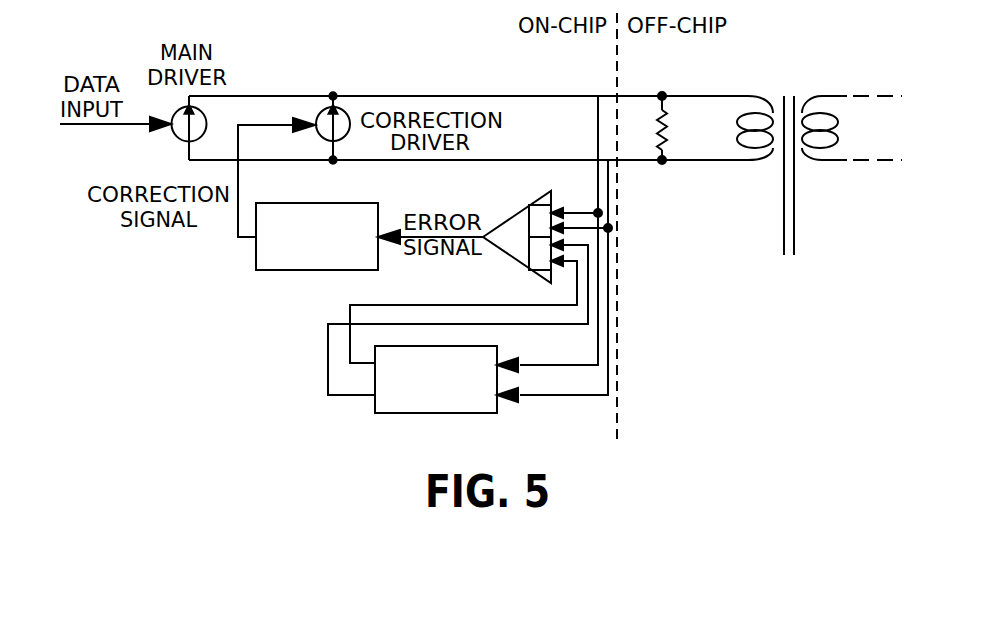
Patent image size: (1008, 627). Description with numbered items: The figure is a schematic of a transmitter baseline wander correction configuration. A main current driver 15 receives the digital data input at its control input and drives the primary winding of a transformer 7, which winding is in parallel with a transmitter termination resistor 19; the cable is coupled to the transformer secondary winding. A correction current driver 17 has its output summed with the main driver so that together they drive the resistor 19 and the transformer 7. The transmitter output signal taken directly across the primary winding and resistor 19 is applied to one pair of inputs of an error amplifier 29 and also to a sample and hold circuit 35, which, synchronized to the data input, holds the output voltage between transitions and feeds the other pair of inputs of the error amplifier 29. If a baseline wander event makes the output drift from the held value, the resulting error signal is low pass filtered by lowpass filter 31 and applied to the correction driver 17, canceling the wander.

The transformer 7 is at (811, 75).
The main current driver 15 is at (178, 139).
The correction current driver 17 is at (321, 111).
The transmitter termination resistor 19 is at (668, 119).
The error amplifier 29 is at (527, 210).
The lowpass filter 31 is at (255, 258).
The sample and hold circuit 35 is at (390, 412).